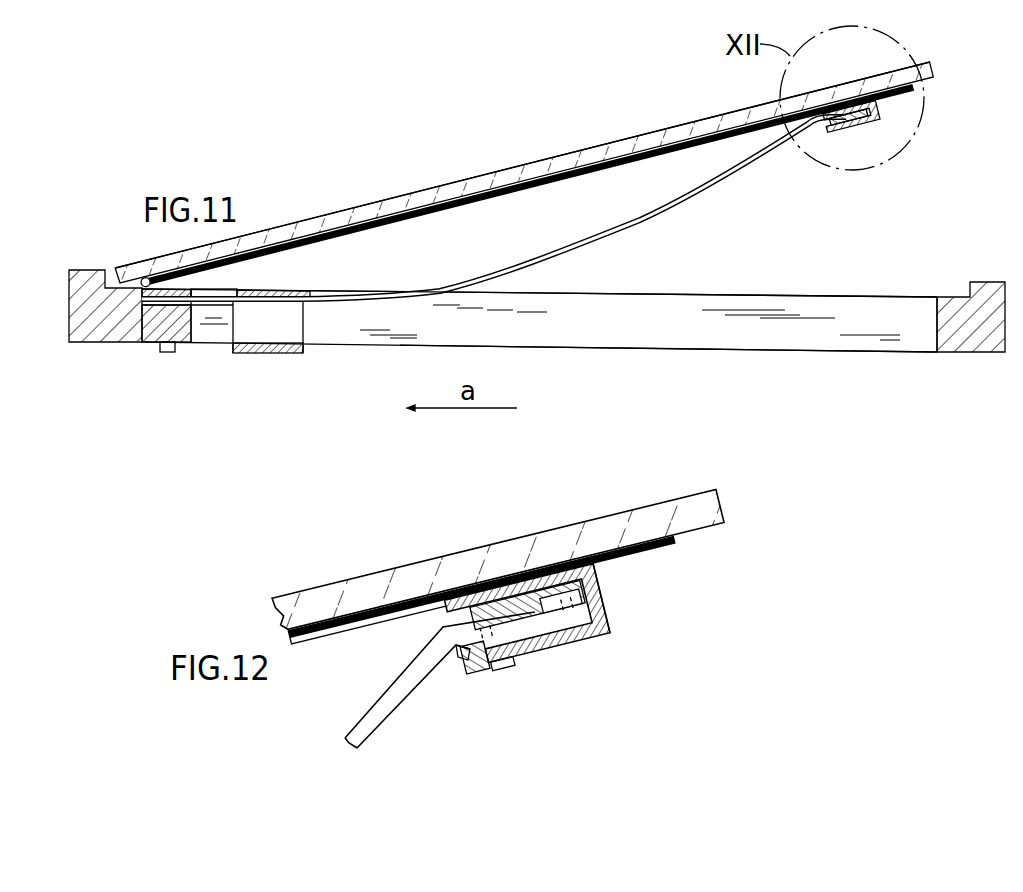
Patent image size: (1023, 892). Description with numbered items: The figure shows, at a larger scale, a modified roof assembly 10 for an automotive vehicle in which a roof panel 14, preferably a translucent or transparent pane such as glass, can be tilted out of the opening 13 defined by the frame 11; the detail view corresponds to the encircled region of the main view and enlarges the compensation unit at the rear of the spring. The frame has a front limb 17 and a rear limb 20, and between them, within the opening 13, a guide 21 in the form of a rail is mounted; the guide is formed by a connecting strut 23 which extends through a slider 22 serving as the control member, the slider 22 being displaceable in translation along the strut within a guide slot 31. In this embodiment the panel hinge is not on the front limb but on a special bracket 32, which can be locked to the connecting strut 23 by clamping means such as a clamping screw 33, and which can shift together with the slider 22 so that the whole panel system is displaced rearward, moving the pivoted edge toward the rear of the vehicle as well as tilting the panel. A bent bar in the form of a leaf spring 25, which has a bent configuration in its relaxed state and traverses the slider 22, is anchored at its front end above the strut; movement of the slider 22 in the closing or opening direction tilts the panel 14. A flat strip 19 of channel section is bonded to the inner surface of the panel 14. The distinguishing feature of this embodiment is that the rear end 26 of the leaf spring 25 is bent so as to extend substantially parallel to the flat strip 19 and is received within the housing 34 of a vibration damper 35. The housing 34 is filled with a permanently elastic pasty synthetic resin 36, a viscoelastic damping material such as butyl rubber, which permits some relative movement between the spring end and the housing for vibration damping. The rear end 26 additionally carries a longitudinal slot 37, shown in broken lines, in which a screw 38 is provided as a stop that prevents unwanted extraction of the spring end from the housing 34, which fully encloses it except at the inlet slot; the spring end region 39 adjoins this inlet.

In FIG. 11, the assembly 10 is at (477, 166).
In FIG. 11, the frame 11 is at (940, 358).
In FIG. 11, the opening 13 is at (850, 305).
In FIG. 11, the roof panel 14 is at (560, 154).
In FIG. 12, the roof panel 14 is at (350, 573).
In FIG. 11, the front limb 17 is at (93, 320).
In FIG. 11, the flat strip 19 is at (583, 172).
In FIG. 12, the flat strip 19 is at (661, 549).
In FIG. 11, the rear limb 20 is at (988, 282).
In FIG. 11, the guide 21 is at (571, 352).
In FIG. 11, the slider 22 is at (268, 360).
In FIG. 11, the connecting strut 23 is at (760, 353).
In FIG. 11, the leaf spring 25 is at (668, 226).
In FIG. 12, the leaf spring 25 is at (440, 680).
In FIG. 11, the rear end 26 is at (840, 130).
In FIG. 12, the rear end 26 is at (555, 620).
In FIG. 11, the guide slot 31 is at (303, 323).
In FIG. 11, the bracket 32 is at (150, 333).
In FIG. 11, the clamping screw 33 is at (169, 353).
In FIG. 12, the housing 34 is at (594, 636).
In FIG. 11, the bracket 35 is at (870, 134).
In FIG. 12, the bracket 35 is at (618, 636).
In FIG. 12, the permanently elastic pasty synthetic resin 36 is at (486, 662).
In FIG. 12, the longitudinal slot 37 is at (507, 615).
In FIG. 12, the screw 38 is at (508, 669).
In FIG. 12, the spring end 39 is at (462, 650).